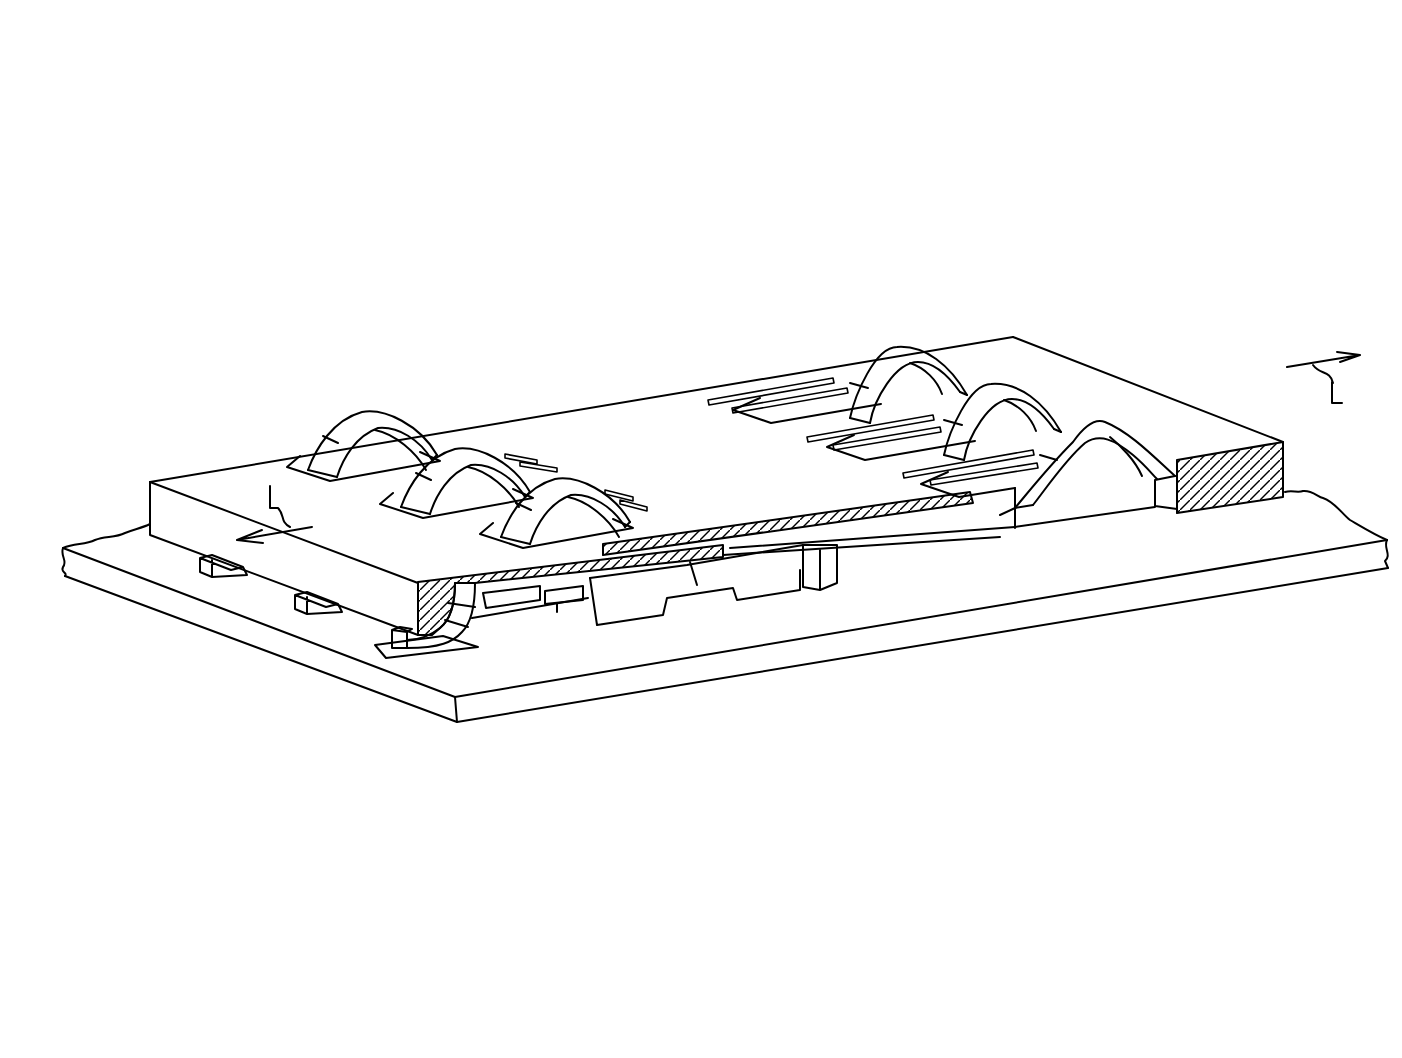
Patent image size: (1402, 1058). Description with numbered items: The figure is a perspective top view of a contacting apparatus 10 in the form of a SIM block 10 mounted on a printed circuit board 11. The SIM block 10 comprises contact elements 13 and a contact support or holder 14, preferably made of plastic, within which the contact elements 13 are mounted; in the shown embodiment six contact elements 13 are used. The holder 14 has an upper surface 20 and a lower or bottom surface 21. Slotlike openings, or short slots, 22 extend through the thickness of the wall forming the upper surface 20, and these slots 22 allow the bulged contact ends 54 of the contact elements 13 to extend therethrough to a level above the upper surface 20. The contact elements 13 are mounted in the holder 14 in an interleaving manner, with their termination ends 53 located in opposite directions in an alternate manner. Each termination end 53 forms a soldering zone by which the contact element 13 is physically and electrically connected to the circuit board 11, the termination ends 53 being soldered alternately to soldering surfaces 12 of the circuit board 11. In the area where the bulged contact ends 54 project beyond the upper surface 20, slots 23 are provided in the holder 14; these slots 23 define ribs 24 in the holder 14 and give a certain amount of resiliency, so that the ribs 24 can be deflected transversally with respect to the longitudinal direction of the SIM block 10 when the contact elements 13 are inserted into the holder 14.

The contacting apparatus 10 is at (855, 288).
The printed circuit board 11 is at (815, 648).
The soldering surface 12 is at (360, 647).
The contact element 13 is at (944, 354).
The contact support or holder 14 is at (1108, 373).
The upper surface 20 is at (650, 410).
The lower or bottom surface 21 is at (1210, 507).
The slotlike opening 22 is at (453, 440).
The slot 23 is at (737, 393).
The rib 24 is at (1145, 410).
The termination end 53 is at (432, 645).
The bulged contact end 54 is at (355, 428).